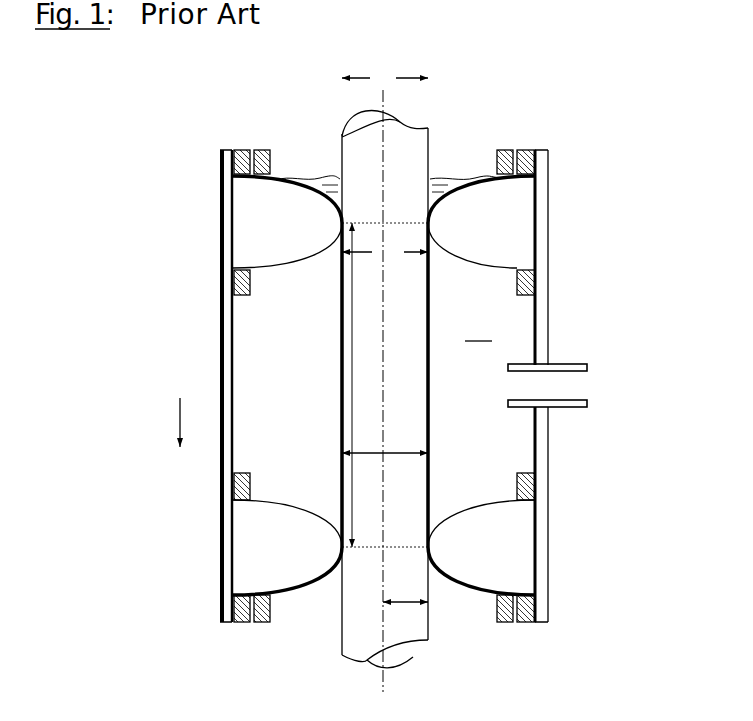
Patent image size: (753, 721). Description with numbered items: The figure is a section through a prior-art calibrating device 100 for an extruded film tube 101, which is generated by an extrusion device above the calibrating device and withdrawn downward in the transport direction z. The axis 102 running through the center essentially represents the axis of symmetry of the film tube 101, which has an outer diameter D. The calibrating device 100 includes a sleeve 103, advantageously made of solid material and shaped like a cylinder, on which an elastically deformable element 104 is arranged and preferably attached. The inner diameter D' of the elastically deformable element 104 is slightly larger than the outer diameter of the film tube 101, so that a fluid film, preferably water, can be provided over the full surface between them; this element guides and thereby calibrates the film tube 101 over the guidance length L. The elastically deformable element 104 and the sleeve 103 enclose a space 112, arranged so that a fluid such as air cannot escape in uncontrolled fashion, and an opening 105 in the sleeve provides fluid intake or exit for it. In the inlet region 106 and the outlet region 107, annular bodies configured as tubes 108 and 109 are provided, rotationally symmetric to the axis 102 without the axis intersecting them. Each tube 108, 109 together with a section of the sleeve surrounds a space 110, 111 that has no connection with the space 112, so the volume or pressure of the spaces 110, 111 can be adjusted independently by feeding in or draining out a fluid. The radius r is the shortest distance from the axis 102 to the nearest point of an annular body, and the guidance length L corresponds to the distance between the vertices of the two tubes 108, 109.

The calibrating device 100 is at (612, 172).
The film tube 101 is at (430, 155).
The axis 102 is at (407, 657).
The sleeve 103 is at (540, 318).
The elastically deformable element 104 is at (430, 438).
The opening 105 is at (568, 385).
The inlet region 106 is at (322, 168).
The outlet region 107 is at (467, 594).
The tube 108 is at (498, 263).
The tube 109 is at (500, 503).
The space 110 is at (515, 208).
The space 111 is at (517, 560).
The space 112 is at (482, 485).